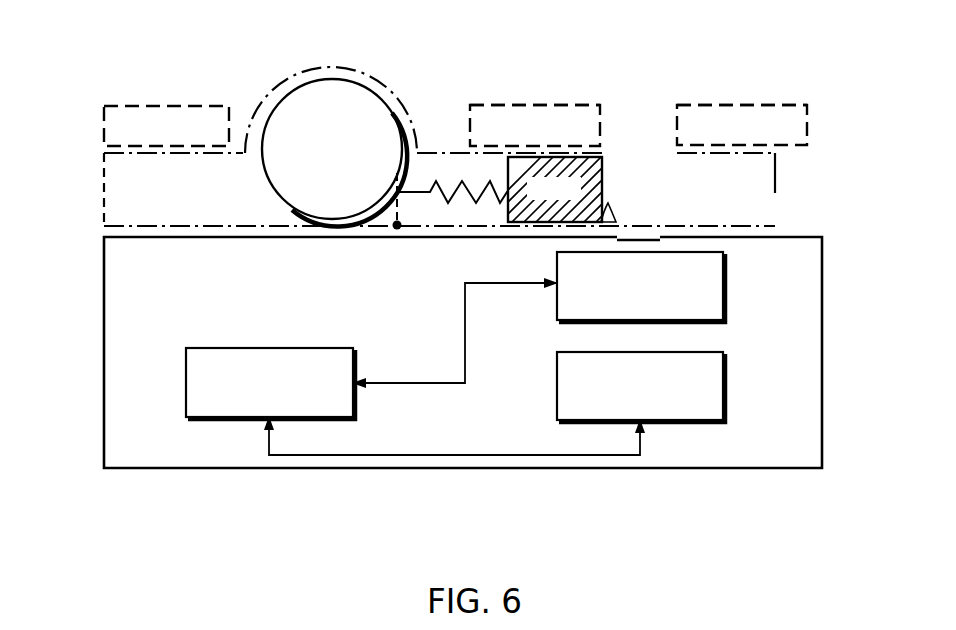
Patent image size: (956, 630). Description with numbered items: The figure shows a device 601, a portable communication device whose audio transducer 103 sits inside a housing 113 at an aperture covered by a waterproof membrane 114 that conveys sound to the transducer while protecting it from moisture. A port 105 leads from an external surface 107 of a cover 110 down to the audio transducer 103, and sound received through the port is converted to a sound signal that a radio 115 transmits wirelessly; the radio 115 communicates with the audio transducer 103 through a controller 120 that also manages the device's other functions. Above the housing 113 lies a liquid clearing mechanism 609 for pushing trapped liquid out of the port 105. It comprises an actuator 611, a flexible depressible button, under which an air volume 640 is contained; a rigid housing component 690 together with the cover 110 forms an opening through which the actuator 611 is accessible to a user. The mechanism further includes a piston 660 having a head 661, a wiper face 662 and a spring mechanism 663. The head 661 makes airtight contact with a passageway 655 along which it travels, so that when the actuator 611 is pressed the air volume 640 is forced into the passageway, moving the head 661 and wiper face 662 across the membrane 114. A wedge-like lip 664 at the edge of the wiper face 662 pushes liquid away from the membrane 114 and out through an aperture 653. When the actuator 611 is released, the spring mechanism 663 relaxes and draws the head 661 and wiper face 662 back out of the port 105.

The device 601 is at (170, 515).
The liquid clearing mechanism 609 is at (99, 190).
The rigid housing component 690 is at (104, 126).
The air volume 640 is at (292, 106).
The actuator 611 is at (367, 70).
The spring mechanism 663 is at (455, 186).
The acoustic channel 655 is at (490, 171).
The cover 110 is at (528, 103).
The external surface 107 is at (585, 97).
The piston 660 is at (568, 115).
The head 661 is at (554, 189).
The wiper face 662 is at (593, 177).
The lip 664 is at (600, 216).
The port 105 is at (638, 118).
The aperture 653 is at (772, 210).
The membrane 114 is at (650, 228).
The housing 113 is at (104, 326).
The controller 120 is at (186, 383).
The audio transducer 103 is at (733, 283).
The radio 115 is at (725, 389).